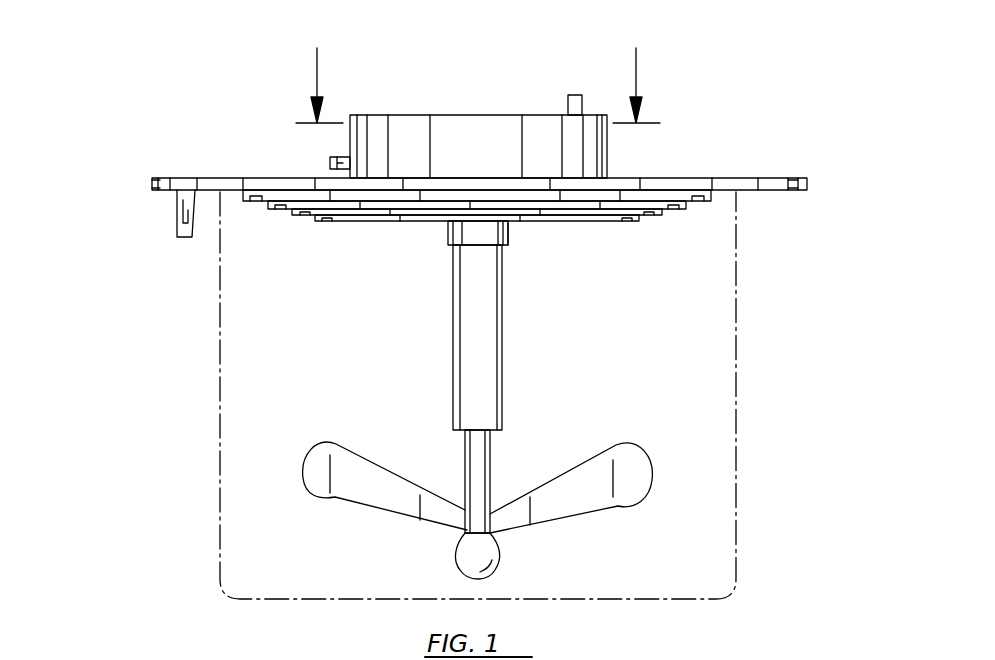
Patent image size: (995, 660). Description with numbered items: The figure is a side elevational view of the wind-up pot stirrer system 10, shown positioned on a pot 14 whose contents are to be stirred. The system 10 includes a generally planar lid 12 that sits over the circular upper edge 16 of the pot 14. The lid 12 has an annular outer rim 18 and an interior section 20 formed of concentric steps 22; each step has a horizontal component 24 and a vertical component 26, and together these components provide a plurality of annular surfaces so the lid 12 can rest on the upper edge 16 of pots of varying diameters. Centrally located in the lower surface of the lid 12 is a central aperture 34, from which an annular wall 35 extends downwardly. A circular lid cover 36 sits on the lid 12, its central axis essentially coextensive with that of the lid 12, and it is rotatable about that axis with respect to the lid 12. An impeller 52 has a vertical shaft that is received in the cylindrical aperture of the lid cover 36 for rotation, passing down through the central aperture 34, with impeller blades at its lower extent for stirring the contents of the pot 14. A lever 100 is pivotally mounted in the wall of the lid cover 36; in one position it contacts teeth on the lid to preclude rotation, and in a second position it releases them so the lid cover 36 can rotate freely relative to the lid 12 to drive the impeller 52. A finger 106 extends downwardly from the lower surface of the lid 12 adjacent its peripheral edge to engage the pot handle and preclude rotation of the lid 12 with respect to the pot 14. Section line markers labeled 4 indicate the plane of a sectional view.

The system 10 is at (226, 84).
The lid 12 is at (680, 183).
The pot 14 is at (736, 486).
The upper edge 16 is at (737, 196).
The annular outer rim 18 is at (152, 182).
The interior section 20 is at (493, 300).
The concentric steps 22 is at (338, 222).
The horizontal component 24 is at (655, 210).
The vertical component 26 is at (665, 210).
The central aperture 34 is at (505, 245).
The annular wall 35 is at (450, 238).
The lid cover 36 is at (462, 130).
The impeller 52 is at (488, 487).
The lever 100 is at (330, 160).
The finger 106 is at (176, 222).
The section line 4- 4 is at (476, 85).